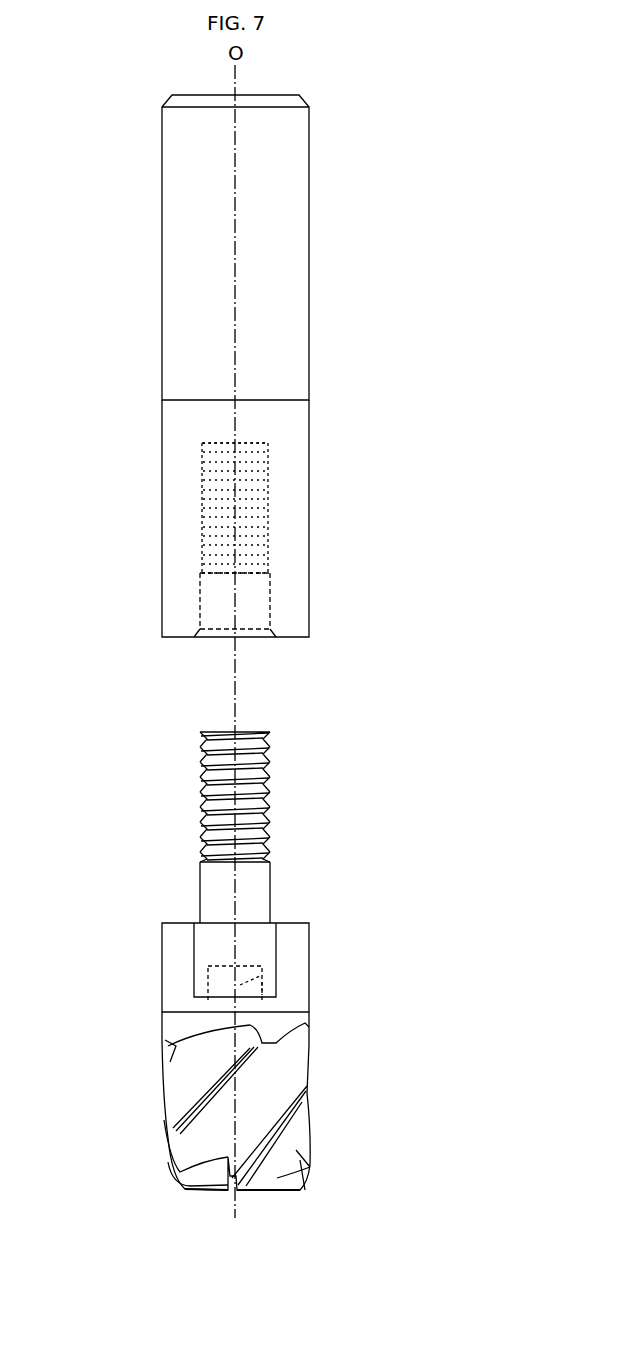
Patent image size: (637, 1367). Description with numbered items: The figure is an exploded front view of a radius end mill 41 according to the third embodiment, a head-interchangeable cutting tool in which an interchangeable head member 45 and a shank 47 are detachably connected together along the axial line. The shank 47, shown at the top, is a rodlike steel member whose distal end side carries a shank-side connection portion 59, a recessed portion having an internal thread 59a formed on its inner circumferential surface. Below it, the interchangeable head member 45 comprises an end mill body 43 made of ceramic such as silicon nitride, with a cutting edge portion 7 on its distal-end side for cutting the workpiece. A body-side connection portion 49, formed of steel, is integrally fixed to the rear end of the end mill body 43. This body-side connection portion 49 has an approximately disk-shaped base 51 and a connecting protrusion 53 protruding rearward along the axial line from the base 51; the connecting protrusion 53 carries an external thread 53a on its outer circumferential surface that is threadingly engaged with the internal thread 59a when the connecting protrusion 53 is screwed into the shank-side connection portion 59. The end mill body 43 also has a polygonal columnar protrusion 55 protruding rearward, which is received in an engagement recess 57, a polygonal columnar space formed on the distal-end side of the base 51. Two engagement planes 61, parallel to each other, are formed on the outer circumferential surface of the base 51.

The cutting edge portion 7 is at (277, 1183).
The radius end mill 41 is at (295, 366).
The end mill body 43 is at (287, 1071).
The interchangeable head member 45 is at (267, 976).
The shank 47 is at (338, 190).
The body-side connection portion 49 is at (222, 869).
The base 51 is at (243, 935).
The connecting protrusion 53 is at (180, 824).
The external thread 53a is at (202, 737).
The protrusion 55 is at (262, 982).
The engagement recess 57 is at (214, 978).
The shank-side connection portion 59 is at (183, 540).
The internal thread 59a is at (202, 472).
The engagement planes 61 is at (270, 940).